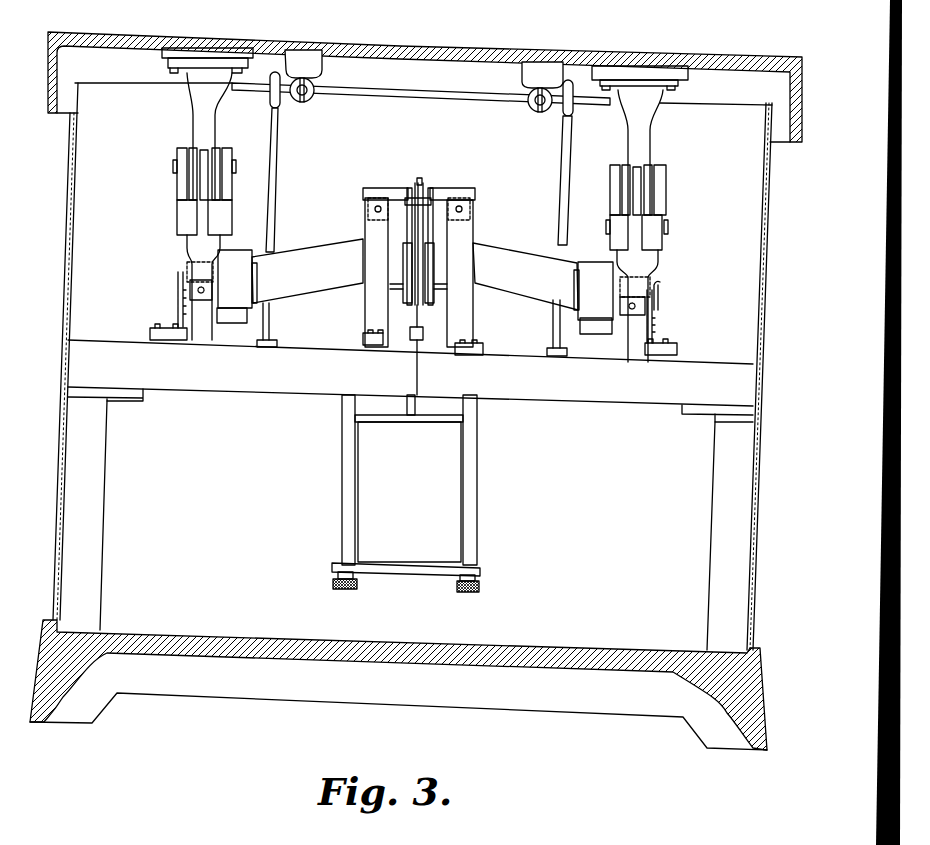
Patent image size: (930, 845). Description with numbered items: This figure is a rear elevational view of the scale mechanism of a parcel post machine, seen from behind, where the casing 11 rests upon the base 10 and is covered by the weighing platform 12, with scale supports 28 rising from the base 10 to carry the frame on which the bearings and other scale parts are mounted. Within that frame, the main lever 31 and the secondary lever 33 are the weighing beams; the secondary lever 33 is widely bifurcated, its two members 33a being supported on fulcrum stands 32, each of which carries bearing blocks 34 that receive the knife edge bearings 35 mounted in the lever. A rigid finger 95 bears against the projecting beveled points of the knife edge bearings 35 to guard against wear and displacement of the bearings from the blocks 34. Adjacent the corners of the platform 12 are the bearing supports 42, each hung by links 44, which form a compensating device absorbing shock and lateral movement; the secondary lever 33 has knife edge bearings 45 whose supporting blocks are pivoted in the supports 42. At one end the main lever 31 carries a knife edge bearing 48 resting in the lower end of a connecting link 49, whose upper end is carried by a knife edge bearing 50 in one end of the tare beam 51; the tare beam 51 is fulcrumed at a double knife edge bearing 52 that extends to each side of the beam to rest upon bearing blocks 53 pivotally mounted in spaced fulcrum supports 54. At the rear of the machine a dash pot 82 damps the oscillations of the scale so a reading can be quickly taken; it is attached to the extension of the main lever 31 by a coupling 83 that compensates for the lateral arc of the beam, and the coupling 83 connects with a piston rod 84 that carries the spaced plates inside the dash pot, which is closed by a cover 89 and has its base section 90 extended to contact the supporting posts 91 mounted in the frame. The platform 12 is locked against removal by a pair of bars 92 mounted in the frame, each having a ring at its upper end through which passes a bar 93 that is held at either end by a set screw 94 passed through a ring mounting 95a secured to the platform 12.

The base 10 is at (153, 643).
The casing 11 is at (72, 208).
The weighing platform 12 is at (60, 97).
The scale supports 28 is at (87, 493).
The main lever 31 is at (403, 302).
The fulcrum stands 32 is at (163, 333).
The secondary lever 33 is at (307, 288).
The members 33a is at (607, 340).
The bearing blocks 34 is at (657, 290).
The knife edge bearings 35 is at (193, 268).
The bearing supports 42 is at (197, 107).
The links 44 is at (195, 192).
The knife edge bearings 45 is at (263, 330).
The knife edge bearing 48 is at (402, 297).
The connecting link 49 is at (420, 185).
The knife edge bearing 50 is at (407, 188).
The tare beam 51 is at (427, 193).
The double knife edge bearing 52 is at (484, 183).
The bearing blocks 53 is at (363, 197).
The fulcrum supports 54 is at (377, 231).
The dash pot 82 is at (368, 473).
The coupling 83 is at (420, 317).
The piston rod 84 is at (410, 402).
The cover 89 is at (451, 418).
The base section 90 is at (417, 570).
The supporting posts 91 is at (470, 515).
The bars 92 is at (273, 166).
The bar 93 is at (437, 92).
The set screw 94 is at (526, 82).
The rigid finger 95 is at (177, 280).
The ring mounting 95a is at (323, 70).